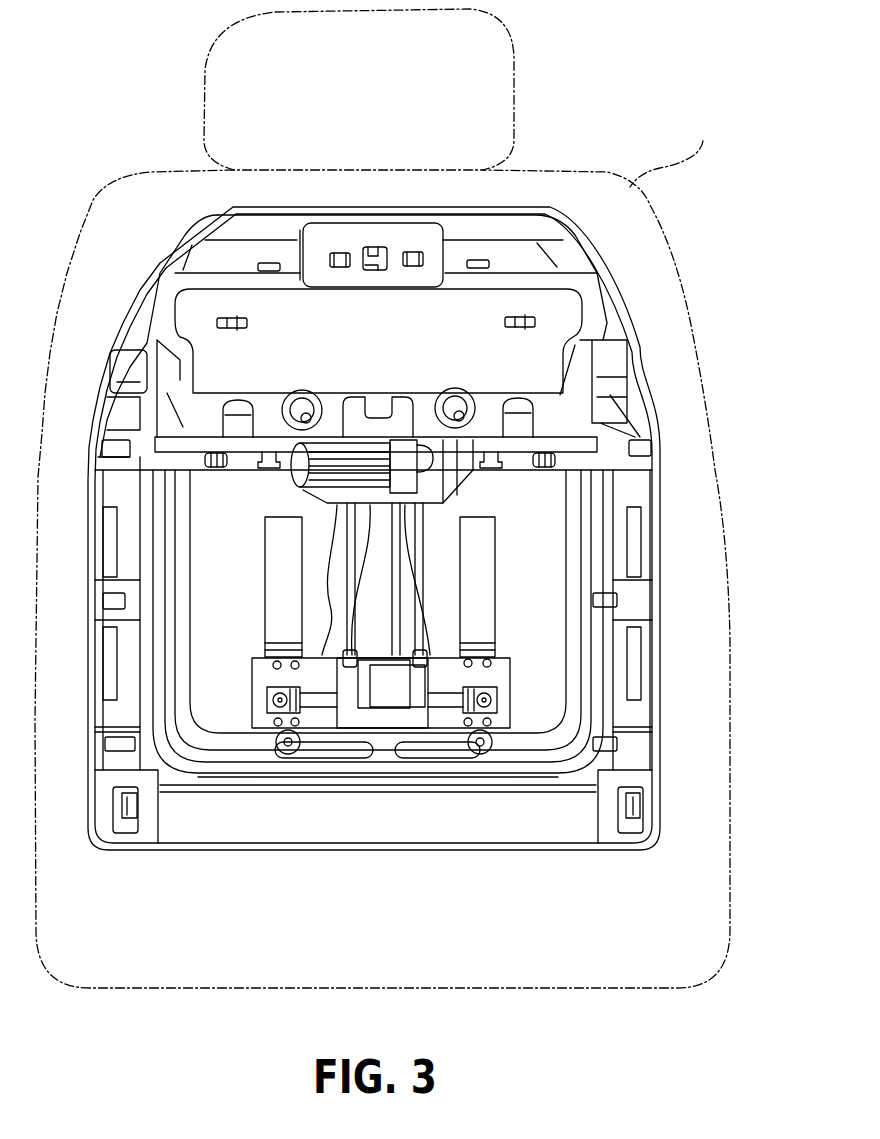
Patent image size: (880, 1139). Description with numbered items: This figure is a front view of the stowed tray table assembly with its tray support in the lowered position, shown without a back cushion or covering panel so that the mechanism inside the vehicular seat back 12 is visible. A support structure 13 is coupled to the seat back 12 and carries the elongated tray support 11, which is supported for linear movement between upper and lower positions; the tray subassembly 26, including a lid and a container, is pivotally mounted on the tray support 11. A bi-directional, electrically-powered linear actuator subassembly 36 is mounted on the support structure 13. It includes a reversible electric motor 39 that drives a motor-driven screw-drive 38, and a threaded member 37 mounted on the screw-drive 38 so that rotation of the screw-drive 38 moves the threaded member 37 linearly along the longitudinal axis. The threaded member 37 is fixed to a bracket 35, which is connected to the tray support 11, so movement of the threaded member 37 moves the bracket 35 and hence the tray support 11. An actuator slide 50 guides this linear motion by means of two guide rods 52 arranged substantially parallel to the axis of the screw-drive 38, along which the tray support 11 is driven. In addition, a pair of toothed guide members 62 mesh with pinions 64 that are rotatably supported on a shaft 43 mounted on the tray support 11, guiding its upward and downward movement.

The tray support 11 is at (330, 750).
The vehicular seat back 12 is at (624, 182).
The support structure 13 is at (555, 418).
The tray subassembly 26 is at (582, 557).
The bracket 35 is at (411, 722).
The linear actuator subassembly 36 is at (362, 415).
The threaded member 37 is at (403, 700).
The screw-drive 38 is at (400, 547).
The reversible electric motor 39 is at (348, 447).
The shaft 43 is at (447, 700).
The actuator slide 50 is at (315, 561).
The guide rods 52 is at (340, 603).
The toothed guide members 62 is at (262, 618).
The pinions 64 is at (327, 737).